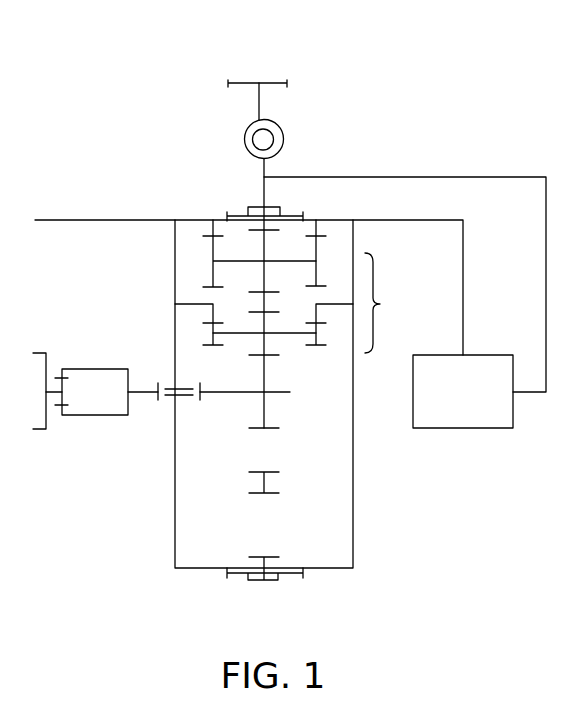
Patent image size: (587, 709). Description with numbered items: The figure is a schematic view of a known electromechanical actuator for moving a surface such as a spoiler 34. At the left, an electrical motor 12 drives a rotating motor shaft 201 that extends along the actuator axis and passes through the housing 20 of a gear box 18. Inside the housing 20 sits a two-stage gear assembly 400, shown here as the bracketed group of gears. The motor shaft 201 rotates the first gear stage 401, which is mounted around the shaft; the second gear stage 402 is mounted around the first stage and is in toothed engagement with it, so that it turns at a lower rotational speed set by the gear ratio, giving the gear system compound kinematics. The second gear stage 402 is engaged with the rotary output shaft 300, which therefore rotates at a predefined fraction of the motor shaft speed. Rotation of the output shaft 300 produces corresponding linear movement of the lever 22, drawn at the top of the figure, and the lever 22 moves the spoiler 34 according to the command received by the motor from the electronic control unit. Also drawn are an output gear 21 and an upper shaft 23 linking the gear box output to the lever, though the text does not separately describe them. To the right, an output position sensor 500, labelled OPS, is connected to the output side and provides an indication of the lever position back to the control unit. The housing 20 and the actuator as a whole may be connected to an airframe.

The motor 12 is at (88, 403).
The gear box 18 is at (213, 245).
The housing 20 is at (342, 563).
The output gear 21 is at (265, 230).
The lever 22 is at (257, 138).
The output shaft 23 is at (260, 108).
The spoiler 34 is at (253, 82).
The motor shaft 201 is at (222, 392).
The output shaft 300 is at (264, 168).
The gear assembly 400 is at (398, 303).
The first gear stage 401 is at (290, 334).
The second gear stage 402 is at (316, 270).
The output position sensor 500 is at (467, 430).